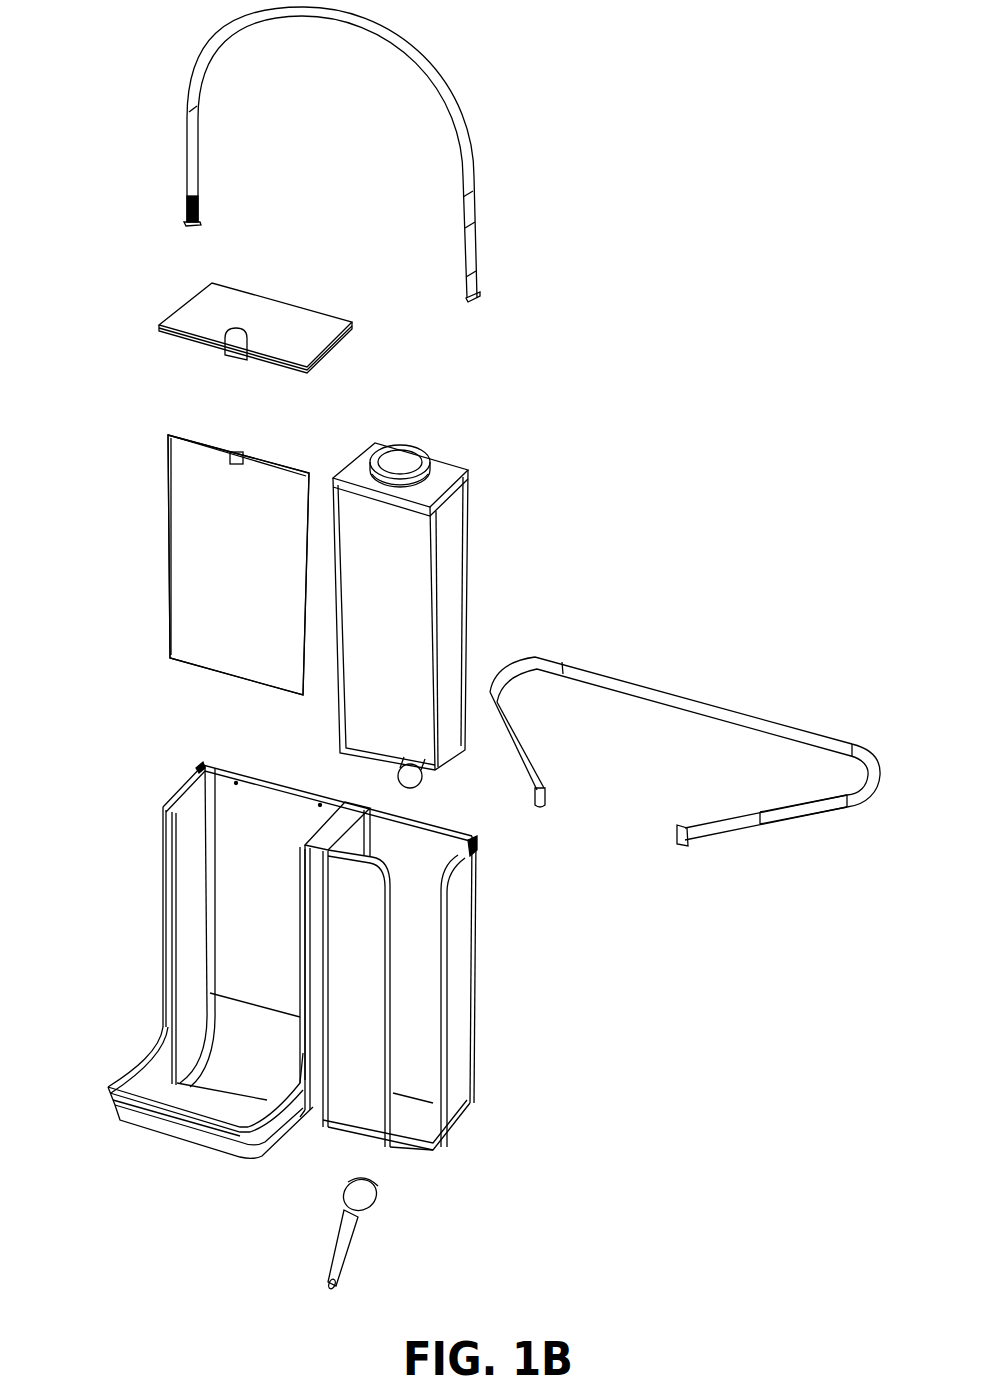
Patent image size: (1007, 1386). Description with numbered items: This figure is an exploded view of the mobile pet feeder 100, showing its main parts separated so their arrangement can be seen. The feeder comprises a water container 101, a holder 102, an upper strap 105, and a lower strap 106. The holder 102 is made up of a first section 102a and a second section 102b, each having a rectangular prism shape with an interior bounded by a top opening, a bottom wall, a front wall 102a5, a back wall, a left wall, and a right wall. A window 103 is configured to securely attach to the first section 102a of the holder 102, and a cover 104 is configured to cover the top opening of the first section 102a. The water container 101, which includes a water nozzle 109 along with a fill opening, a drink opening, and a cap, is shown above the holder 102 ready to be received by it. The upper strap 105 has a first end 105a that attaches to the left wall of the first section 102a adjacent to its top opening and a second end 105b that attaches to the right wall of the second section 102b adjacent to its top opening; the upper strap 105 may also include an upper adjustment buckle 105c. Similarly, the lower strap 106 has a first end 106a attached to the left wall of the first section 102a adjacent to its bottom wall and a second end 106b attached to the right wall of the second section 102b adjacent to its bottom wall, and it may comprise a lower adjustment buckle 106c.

The mobile pet feeder 100 is at (700, 106).
The water container 101 is at (500, 510).
The holder 102 is at (143, 728).
The first section 102a is at (286, 942).
The second section 102b is at (416, 974).
The front wall 102a5 is at (163, 565).
The window 103 is at (143, 532).
The cover 104 is at (290, 262).
The upper strap 105 is at (450, 63).
The first end 105a is at (165, 207).
The second end 105b is at (500, 268).
The upper adjustment buckle 105c is at (486, 199).
The lower strap 106 is at (716, 665).
The first end 106a is at (546, 826).
The second end 106b is at (694, 864).
The lower adjustment buckle 106c is at (770, 842).
The water nozzle 109 is at (376, 1246).